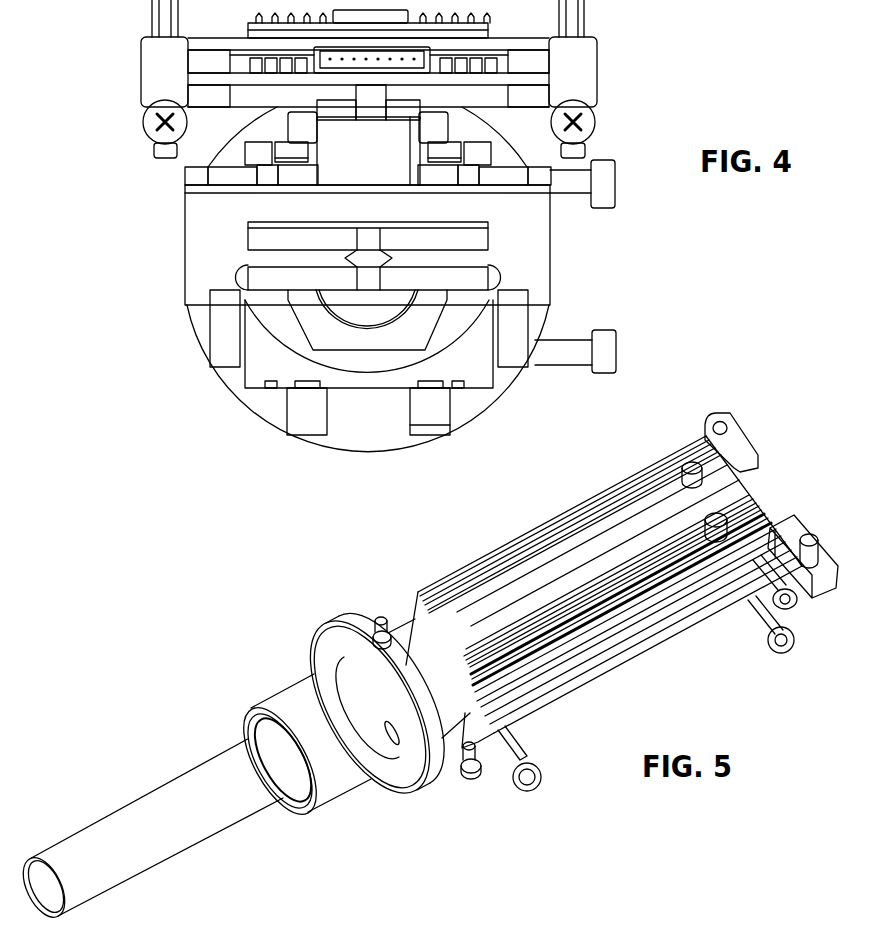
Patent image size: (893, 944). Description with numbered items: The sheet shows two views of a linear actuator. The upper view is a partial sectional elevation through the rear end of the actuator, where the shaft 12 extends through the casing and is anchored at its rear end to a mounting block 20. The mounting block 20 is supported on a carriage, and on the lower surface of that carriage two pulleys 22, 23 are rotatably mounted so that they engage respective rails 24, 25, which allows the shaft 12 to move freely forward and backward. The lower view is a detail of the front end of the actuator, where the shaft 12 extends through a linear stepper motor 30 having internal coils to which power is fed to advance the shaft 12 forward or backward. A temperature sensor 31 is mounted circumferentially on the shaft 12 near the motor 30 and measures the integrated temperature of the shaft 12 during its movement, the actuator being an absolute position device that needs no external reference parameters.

In FIG. 5, the shaft 12 is at (117, 815).
In FIG. 4, the mounting block 20 is at (348, 340).
In FIG. 4, the pulley 22 is at (289, 237).
In FIG. 4, the pulley 23 is at (473, 235).
In FIG. 4, the rail 24 is at (190, 275).
In FIG. 4, the rail 25 is at (548, 268).
In FIG. 5, the linear stepper motor 30 is at (637, 658).
In FIG. 5, the temperature sensor 31 is at (380, 608).